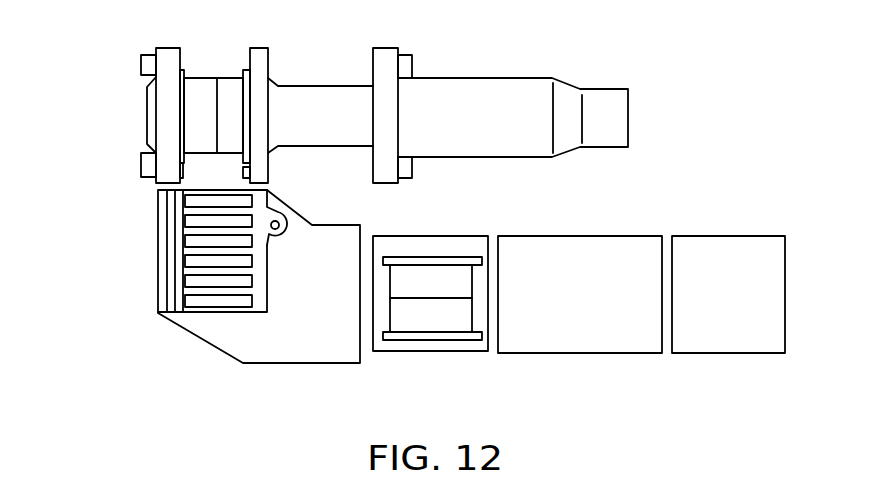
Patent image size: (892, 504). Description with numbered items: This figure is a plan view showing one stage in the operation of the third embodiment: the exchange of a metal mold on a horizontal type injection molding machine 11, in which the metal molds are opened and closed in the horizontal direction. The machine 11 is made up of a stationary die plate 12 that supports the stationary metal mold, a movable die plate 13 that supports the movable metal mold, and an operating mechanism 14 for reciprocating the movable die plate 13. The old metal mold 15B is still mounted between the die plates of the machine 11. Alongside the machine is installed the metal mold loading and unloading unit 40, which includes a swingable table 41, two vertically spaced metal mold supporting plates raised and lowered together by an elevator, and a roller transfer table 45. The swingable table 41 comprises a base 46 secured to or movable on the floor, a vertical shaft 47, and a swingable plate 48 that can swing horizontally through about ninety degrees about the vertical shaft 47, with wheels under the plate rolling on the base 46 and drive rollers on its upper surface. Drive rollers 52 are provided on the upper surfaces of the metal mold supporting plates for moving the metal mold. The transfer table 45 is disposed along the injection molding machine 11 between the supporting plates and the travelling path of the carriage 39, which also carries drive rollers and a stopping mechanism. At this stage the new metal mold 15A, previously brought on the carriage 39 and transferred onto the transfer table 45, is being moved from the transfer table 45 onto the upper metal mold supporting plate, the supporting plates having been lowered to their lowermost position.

The injection molding machine 11 is at (313, 34).
The stationary die plate 12 is at (167, 53).
The movable die plate 13 is at (258, 55).
The operating mechanism 14 is at (500, 107).
The new metal mold 15A is at (428, 270).
The old metal mold 15B is at (130, 92).
The carriage 39 is at (740, 345).
The metal mold loading and unloading unit 40 is at (579, 288).
The swingable table 41 is at (250, 297).
The transfer table 45 is at (588, 343).
The base 46 is at (303, 355).
The vertical shaft 47 is at (278, 222).
The swingable plate 48 is at (258, 288).
The drive rollers 52 is at (445, 287).